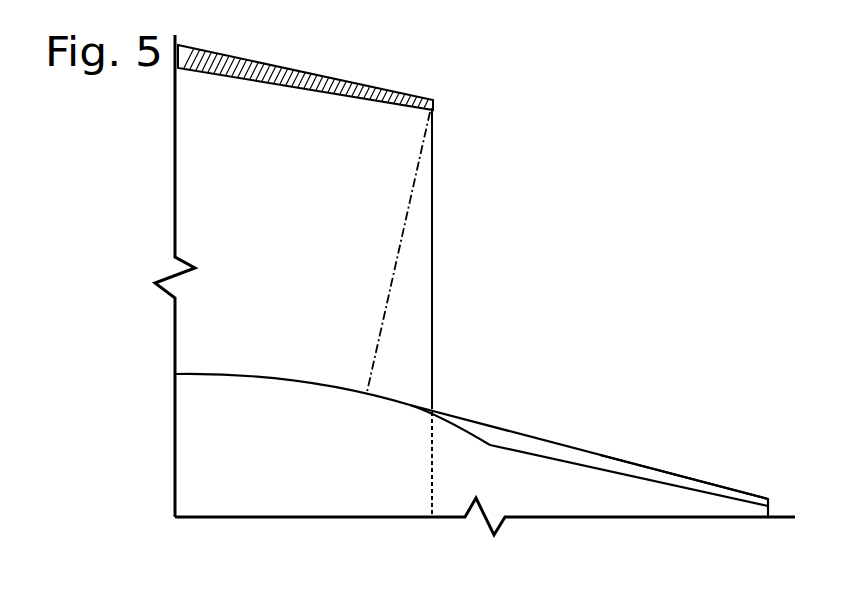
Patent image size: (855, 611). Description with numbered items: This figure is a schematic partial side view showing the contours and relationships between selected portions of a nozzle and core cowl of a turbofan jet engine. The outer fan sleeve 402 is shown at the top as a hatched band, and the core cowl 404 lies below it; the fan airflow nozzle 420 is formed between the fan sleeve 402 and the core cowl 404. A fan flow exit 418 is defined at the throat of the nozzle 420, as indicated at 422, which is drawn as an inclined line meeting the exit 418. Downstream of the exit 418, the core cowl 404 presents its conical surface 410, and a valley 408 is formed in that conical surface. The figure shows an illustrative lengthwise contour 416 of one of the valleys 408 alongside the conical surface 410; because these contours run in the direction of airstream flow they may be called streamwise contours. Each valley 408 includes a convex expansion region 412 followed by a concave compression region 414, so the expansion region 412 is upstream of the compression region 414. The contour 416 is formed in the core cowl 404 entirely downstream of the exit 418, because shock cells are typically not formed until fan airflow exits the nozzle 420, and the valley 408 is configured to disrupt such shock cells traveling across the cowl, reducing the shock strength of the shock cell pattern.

The fan sleeve 402 is at (263, 63).
The core cowl 404 is at (703, 507).
The valley 408 is at (560, 460).
The conical surface 410 is at (655, 465).
The convex expansion region 412 is at (407, 386).
The concave compression region 414 is at (492, 446).
The lengthwise contour 416 is at (618, 475).
The fan flow exit 418 is at (420, 268).
The fan airflow nozzle 420 is at (312, 243).
The throat indication 422 is at (408, 200).